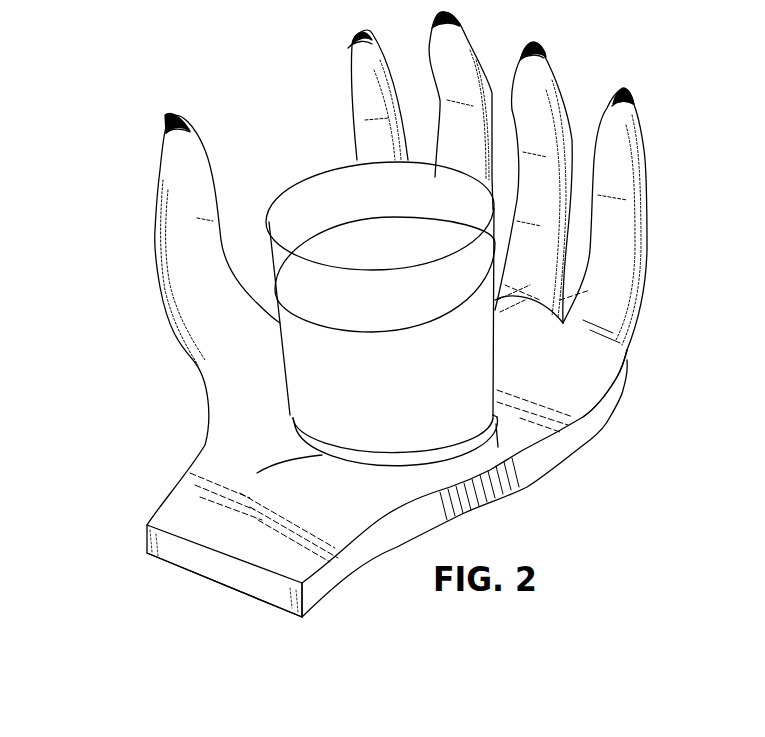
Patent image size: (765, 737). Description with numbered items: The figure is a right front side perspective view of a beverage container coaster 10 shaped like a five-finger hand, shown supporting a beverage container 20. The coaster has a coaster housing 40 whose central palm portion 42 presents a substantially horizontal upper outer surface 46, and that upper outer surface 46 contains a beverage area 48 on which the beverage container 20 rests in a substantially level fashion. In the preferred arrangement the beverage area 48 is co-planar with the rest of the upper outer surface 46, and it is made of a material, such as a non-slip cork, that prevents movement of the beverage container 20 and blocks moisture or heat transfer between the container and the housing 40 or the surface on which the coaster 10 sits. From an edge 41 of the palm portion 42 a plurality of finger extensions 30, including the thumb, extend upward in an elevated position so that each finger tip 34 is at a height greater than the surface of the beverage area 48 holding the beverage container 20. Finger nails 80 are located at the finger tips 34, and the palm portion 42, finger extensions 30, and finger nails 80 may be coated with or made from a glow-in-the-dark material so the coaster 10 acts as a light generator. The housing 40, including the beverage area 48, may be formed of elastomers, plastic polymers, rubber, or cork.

The beverage container coaster 10 is at (80, 221).
The beverage container 20 is at (290, 186).
The finger extension 30 is at (356, 140).
The finger tip 34 is at (193, 133).
The coaster housing 40 is at (353, 517).
The edge 41 is at (627, 350).
The palm portion 42 is at (223, 423).
The upper outer surface 46 is at (557, 330).
The beverage area 48 is at (319, 474).
The finger nail 80 is at (165, 120).